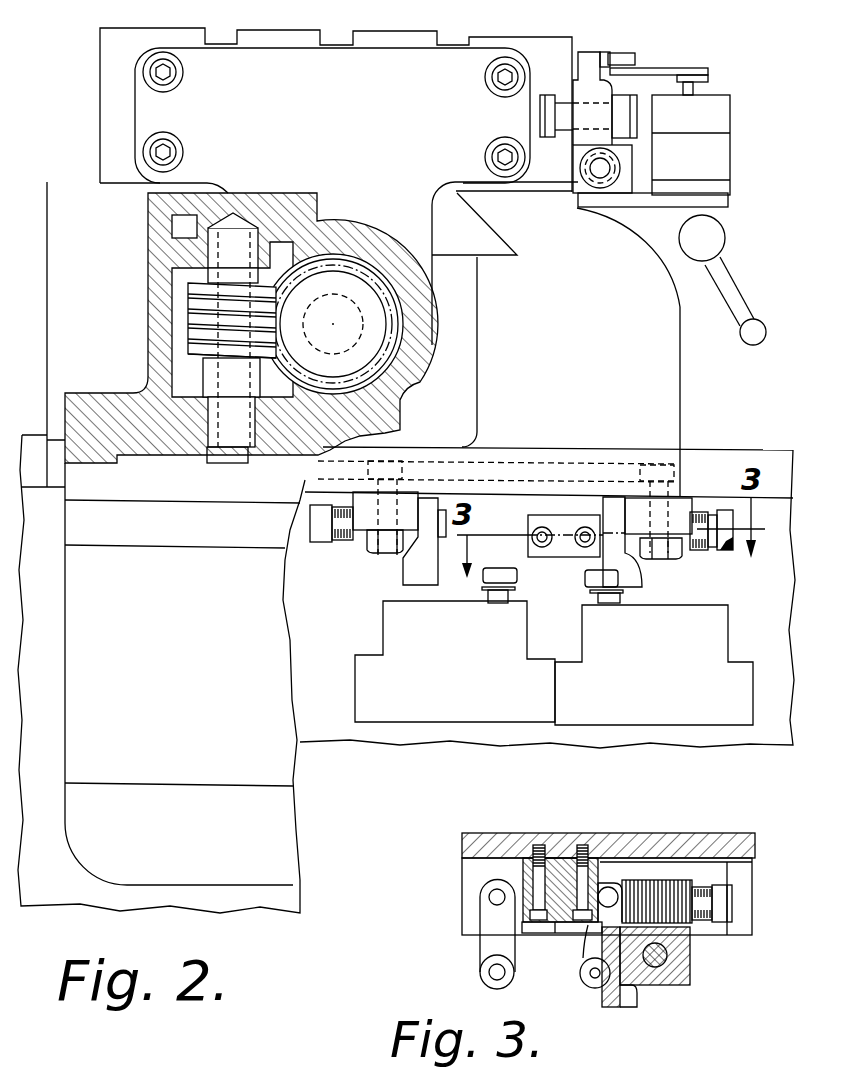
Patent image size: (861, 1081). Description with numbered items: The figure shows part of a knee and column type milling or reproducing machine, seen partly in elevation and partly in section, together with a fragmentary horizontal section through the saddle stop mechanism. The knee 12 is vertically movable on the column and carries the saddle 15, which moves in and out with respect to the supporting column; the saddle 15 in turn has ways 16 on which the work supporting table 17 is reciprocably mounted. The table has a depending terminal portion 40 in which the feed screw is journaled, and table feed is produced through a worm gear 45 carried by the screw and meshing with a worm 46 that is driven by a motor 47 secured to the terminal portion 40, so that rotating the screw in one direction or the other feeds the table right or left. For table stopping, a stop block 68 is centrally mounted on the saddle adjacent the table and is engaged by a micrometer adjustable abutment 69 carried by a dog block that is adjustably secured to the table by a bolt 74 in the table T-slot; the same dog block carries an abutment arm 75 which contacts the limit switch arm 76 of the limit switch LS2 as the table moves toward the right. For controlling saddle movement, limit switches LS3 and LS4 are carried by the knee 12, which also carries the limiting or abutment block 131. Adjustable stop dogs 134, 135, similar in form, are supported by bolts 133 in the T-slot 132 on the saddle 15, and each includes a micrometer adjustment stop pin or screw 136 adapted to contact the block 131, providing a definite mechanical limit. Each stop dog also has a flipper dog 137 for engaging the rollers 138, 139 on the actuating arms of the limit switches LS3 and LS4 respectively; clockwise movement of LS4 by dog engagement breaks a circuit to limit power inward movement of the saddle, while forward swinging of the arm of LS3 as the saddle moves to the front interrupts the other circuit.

In FIG. 2, the knee 12 is at (733, 748).
In FIG. 3, the knee 12 is at (608, 884).
In FIG. 2, the saddle 15 is at (683, 391).
In FIG. 2, the ways 16 is at (498, 260).
In FIG. 2, the work supporting table 17 is at (483, 38).
In FIG. 2, the depending terminal portion 40 is at (414, 378).
In FIG. 2, the worm gear 45 is at (335, 276).
In FIG. 2, the worm 46 is at (190, 298).
In FIG. 2, the motor 47 is at (298, 776).
In FIG. 2, the stop block 68 is at (633, 170).
In FIG. 2, the micrometer adjustable abutment 69 is at (622, 180).
In FIG. 2, the bolt 74 is at (558, 100).
In FIG. 2, the abutment arm 75 is at (602, 53).
In FIG. 2, the limit switch arm 76 is at (664, 68).
In FIG. 2, the limiting or abutment block 131 is at (568, 558).
In FIG. 2, the T-slot 132 is at (632, 462).
In FIG. 2, the bolt 133 is at (678, 470).
In FIG. 2, the adjustable stop dog 134 is at (690, 500).
In FIG. 2, the adjustable stop dog 135 is at (363, 525).
In FIG. 3, the adjustable stop dog 135 is at (606, 915).
In FIG. 2, the micrometer adjustment stop pin or screw 136 is at (318, 543).
In FIG. 3, the micrometer adjustment stop pin or screw 136 is at (735, 905).
In FIG. 2, the flipper dog 137 is at (403, 572).
In FIG. 3, the flipper dog 137 is at (617, 1008).
In FIG. 2, the roller 138 is at (498, 568).
In FIG. 3, the roller 138 is at (512, 982).
In FIG. 2, the roller 139 is at (585, 579).
In FIG. 3, the roller 139 is at (583, 981).
In FIG. 2, the limit switch LS2 is at (732, 120).
In FIG. 2, the limit switch LS3 is at (455, 661).
In FIG. 2, the limit switch LS4 is at (654, 665).